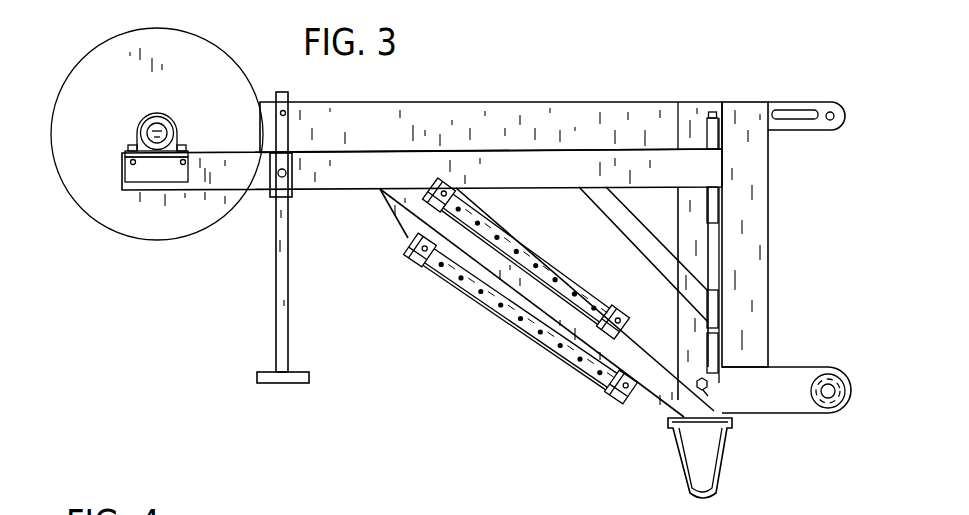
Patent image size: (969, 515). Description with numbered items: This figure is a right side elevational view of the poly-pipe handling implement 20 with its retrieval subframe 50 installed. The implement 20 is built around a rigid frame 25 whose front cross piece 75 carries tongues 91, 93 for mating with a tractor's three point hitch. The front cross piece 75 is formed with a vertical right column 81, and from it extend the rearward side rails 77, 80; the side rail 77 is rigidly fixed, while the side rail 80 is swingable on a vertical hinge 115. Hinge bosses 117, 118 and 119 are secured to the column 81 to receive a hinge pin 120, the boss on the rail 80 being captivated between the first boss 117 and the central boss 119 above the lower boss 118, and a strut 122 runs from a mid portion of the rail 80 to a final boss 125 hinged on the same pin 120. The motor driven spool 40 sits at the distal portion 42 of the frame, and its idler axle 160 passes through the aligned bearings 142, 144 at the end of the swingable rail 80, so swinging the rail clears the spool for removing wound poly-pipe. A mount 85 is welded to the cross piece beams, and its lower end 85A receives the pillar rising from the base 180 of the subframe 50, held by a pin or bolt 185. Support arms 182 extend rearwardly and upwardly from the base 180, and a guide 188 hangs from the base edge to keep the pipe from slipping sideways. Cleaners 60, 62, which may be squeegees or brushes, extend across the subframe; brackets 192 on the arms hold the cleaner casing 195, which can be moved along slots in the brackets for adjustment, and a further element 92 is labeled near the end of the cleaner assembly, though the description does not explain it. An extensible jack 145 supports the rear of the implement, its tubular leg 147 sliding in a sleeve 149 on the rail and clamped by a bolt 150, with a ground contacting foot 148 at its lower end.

The poly-pipe handling implement 20 is at (558, 80).
The rigid frame 25 is at (725, 84).
The motor driven spool 40 is at (88, 243).
The distal portion of the frame 42 is at (258, 213).
The poly-pipe retrieval subframe 50 is at (638, 425).
The cleaner 60 is at (498, 323).
The cleaner 62 is at (548, 238).
The front cross piece 75 is at (793, 192).
The rigid side rail 77 is at (437, 105).
The swingable side rail 80 is at (385, 172).
The right column 81 is at (752, 266).
The mount 85 is at (690, 206).
The lower end of the mount 85A is at (687, 373).
The tongue 91 is at (824, 90).
The stop 92 is at (624, 336).
The tongue 93 is at (826, 418).
The vertical hinge 115 is at (692, 222).
The first hinge boss 117 is at (707, 130).
The lower hinge boss 118 is at (720, 345).
The central hinge boss 119 is at (720, 198).
The hinge pin 120 is at (708, 112).
The strut 122 is at (646, 257).
The final boss 125 is at (720, 305).
The bearing 142 is at (180, 145).
The bearing 144 is at (605, 405).
The extensible jack 145 is at (300, 208).
The tubular leg 147 is at (287, 318).
The ground contacting foot 148 is at (294, 383).
The sleeve 149 is at (270, 197).
The clamping bolt 150 is at (293, 170).
The idler axle 160 is at (148, 128).
The base 180 is at (716, 428).
The support arm 182 is at (552, 303).
The pin or bolt 185 is at (727, 398).
The guide 188 is at (718, 476).
The bracket 192 is at (441, 192).
The casing 195 is at (547, 222).